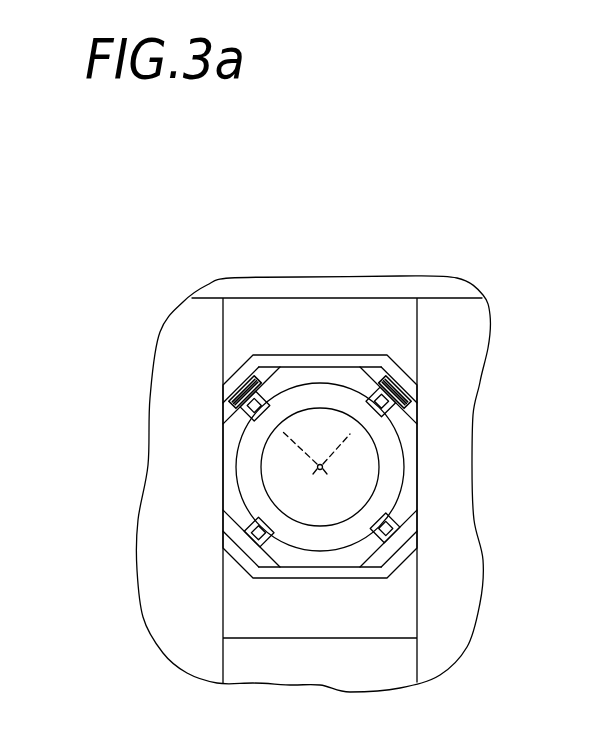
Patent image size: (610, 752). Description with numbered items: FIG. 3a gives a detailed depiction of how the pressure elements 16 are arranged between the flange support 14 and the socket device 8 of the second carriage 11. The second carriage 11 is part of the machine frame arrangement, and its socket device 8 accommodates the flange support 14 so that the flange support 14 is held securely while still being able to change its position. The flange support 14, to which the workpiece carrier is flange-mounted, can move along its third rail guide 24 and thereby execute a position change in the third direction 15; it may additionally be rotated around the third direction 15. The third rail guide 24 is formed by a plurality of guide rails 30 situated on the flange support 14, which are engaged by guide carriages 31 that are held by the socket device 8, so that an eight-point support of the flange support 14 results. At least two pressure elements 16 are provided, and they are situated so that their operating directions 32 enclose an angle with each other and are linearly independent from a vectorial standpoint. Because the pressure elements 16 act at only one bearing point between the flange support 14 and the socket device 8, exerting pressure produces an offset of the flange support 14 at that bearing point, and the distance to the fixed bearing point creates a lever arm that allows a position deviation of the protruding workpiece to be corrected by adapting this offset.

The socket device 8 is at (397, 558).
The second carriage 11 is at (400, 323).
The flange support 14 is at (400, 447).
The third direction 15 is at (308, 468).
The pressure element 16 is at (242, 386).
The third rail guide 24 is at (263, 370).
The guide rail 30 is at (379, 386).
The guide carriage 31 is at (252, 422).
The operating direction 32 is at (290, 443).